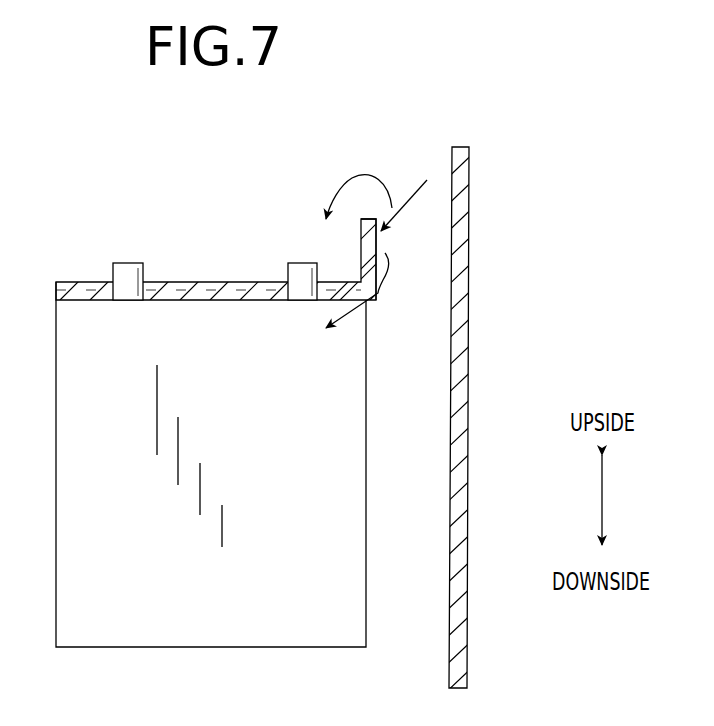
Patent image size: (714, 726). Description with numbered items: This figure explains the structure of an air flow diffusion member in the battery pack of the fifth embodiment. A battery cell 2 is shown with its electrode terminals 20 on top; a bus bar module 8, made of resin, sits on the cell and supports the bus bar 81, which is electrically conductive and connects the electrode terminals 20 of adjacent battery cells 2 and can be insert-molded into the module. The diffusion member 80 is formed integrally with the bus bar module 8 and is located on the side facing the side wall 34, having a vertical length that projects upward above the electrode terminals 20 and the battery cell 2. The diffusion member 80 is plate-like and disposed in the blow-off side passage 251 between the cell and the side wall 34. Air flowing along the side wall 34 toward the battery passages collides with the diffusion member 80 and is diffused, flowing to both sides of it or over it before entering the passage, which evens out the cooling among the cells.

The battery cell 2 is at (71, 361).
The bus bar module 8 is at (221, 276).
The electrode terminal 20 is at (128, 270).
The side wall 34 is at (469, 216).
The diffusion member 80 is at (367, 214).
The bus bar 81 is at (173, 282).
The blow-off side passage 251 is at (322, 192).